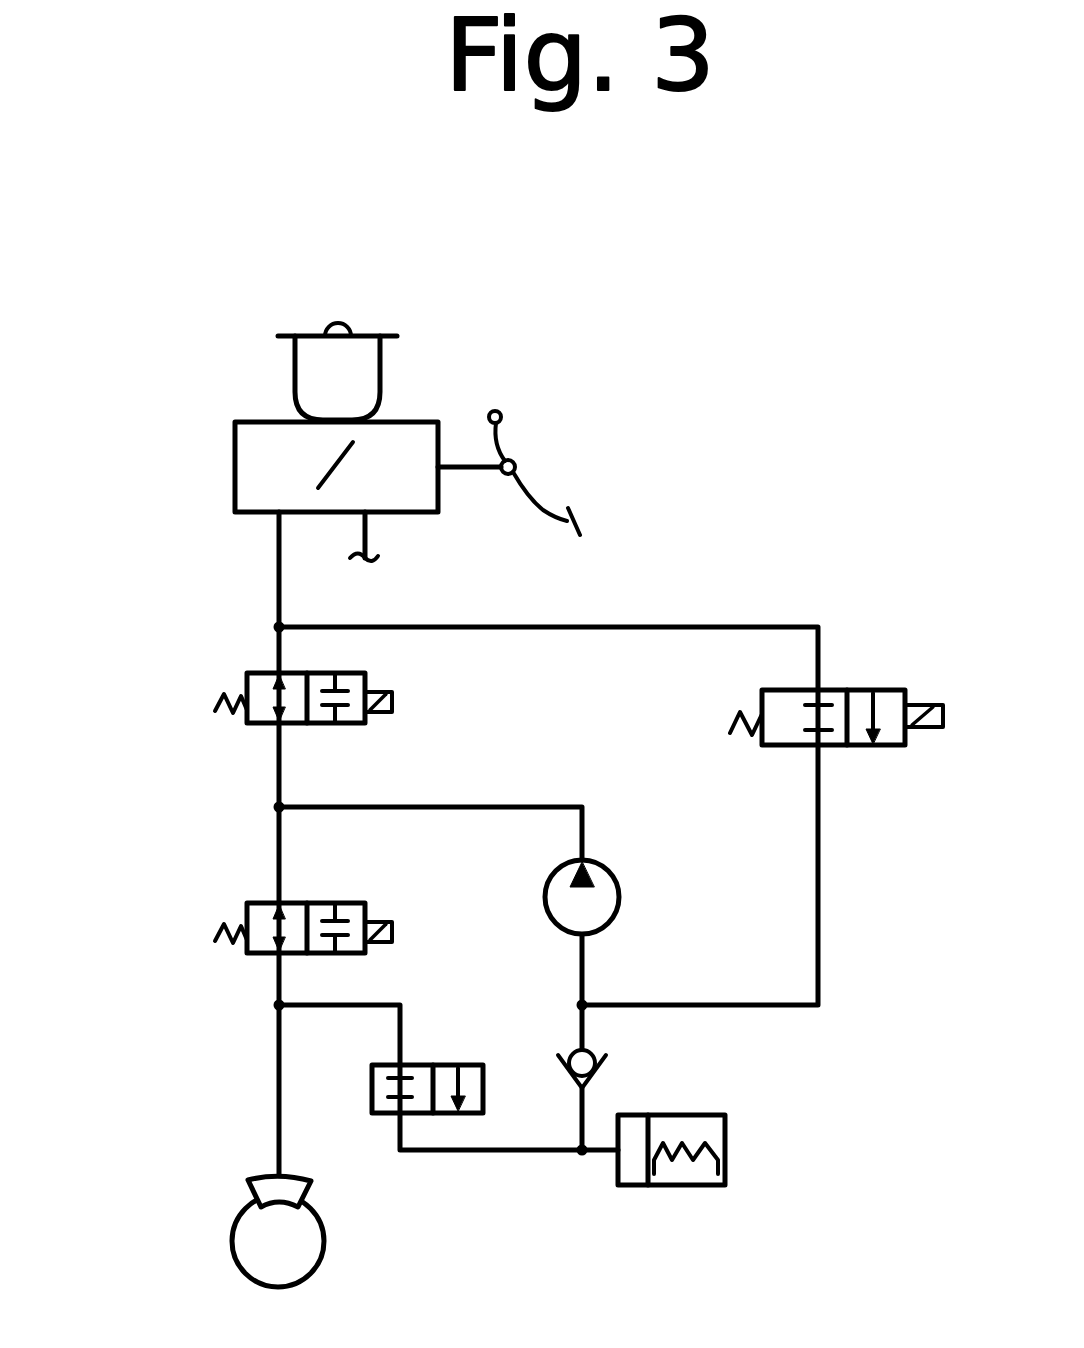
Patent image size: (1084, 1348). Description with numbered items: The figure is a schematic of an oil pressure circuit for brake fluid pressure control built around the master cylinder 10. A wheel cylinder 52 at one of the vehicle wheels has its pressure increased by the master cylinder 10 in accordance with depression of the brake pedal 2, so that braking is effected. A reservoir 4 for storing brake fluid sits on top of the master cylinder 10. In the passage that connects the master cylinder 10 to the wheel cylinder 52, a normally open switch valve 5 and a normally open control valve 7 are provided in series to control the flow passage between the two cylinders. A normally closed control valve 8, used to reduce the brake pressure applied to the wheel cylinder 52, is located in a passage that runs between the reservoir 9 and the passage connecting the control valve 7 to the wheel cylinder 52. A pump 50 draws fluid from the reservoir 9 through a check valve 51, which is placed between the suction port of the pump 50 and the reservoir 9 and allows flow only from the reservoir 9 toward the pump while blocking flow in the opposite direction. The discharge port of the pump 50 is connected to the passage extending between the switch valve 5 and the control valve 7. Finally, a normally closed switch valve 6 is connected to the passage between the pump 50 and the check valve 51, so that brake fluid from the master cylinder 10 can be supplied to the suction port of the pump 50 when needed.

The brake pedal 2 is at (543, 508).
The reservoir 4 is at (358, 378).
The normally open switch valve 5 is at (357, 673).
The normally closed switch valve 6 is at (887, 697).
The normally open control valve 7 is at (347, 903).
The normally closed control valve 8 is at (450, 1063).
The reservoir 9 is at (672, 1113).
The master cylinder 10 is at (237, 428).
The pump 50 is at (610, 877).
The check valve 51 is at (590, 1053).
The wheel cylinder 52 is at (303, 1178).